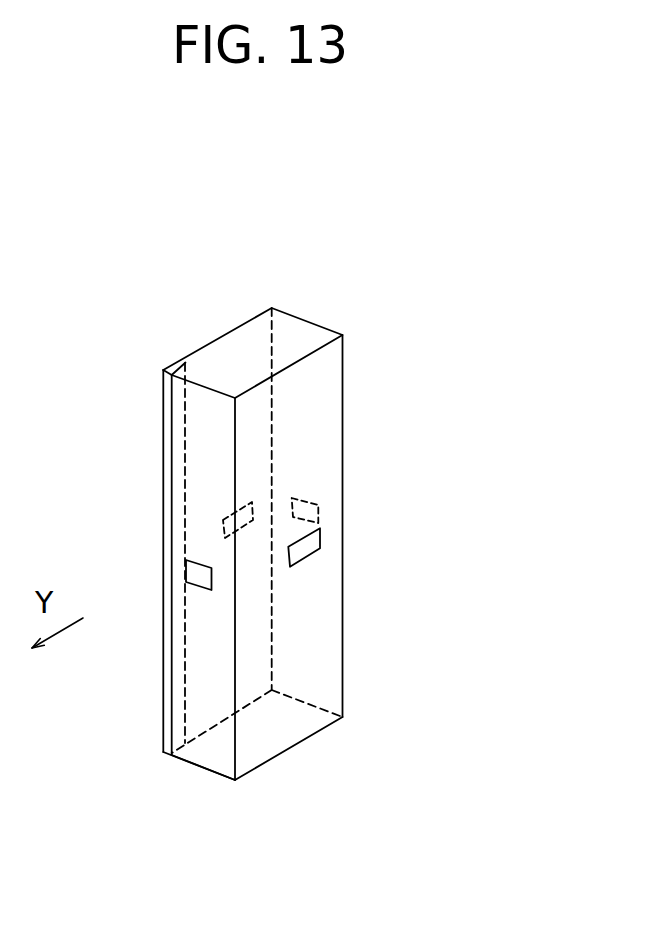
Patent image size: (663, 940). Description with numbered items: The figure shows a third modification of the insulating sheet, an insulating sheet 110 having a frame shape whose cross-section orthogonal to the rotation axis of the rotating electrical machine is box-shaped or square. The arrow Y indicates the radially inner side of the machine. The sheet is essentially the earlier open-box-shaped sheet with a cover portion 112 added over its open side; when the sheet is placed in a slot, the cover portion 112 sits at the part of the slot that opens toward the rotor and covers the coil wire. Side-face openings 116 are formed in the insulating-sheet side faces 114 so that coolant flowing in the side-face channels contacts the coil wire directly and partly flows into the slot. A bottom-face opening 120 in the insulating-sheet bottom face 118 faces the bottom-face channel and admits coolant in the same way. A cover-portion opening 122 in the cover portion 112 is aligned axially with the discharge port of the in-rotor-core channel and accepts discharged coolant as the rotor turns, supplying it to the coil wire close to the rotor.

The insulating sheet 110 is at (278, 261).
The cover portion 112 is at (197, 415).
The insulating-sheet side face 114 is at (215, 360).
The side-face opening 116 is at (247, 503).
The insulating-sheet bottom face 118 is at (302, 342).
The bottom-face opening 120 is at (307, 498).
The cover-portion opening 122 is at (197, 577).